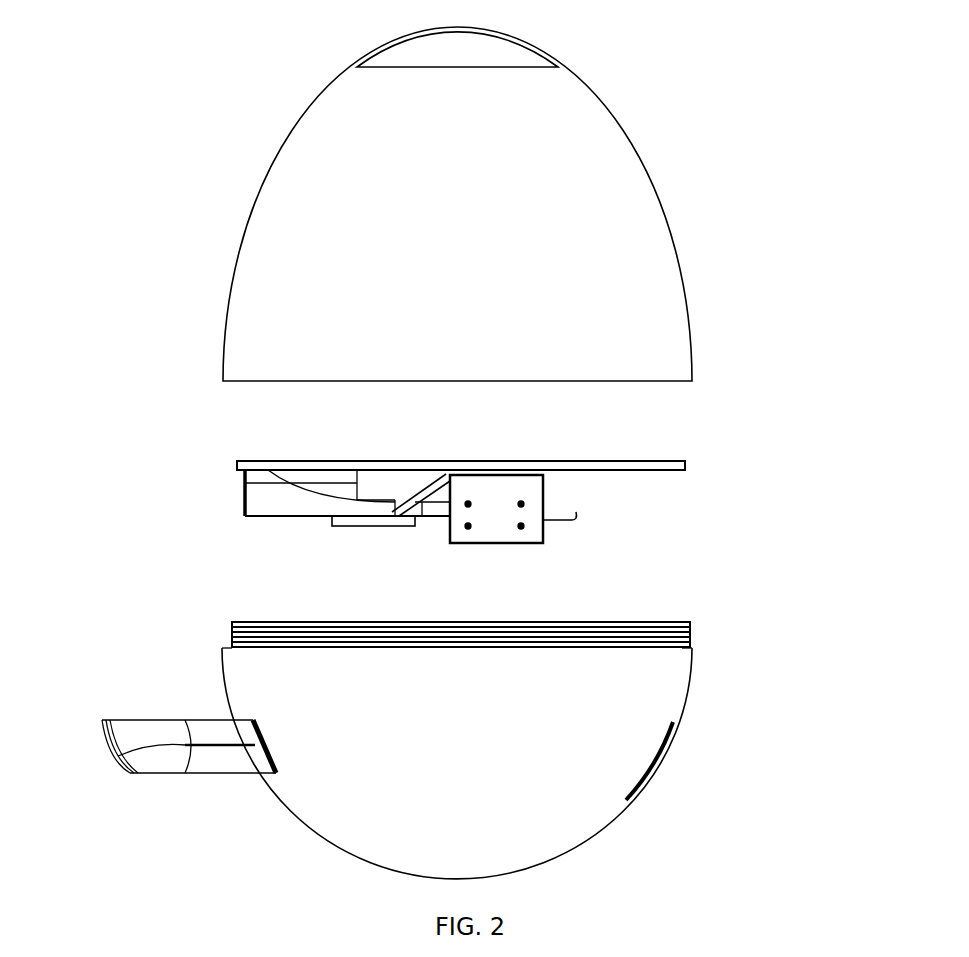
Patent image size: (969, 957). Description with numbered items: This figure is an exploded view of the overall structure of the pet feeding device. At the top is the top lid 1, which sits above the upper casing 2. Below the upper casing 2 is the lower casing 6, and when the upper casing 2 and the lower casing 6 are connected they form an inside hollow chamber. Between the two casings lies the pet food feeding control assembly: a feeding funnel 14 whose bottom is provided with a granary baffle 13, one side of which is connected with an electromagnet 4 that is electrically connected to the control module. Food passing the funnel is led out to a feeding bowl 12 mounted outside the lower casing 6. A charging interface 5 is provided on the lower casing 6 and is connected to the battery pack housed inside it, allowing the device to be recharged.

The top lid 1 is at (452, 55).
The upper casing 2 is at (480, 197).
The electromagnet 4 is at (507, 512).
The charging interface 5 is at (663, 758).
The lower casing 6 is at (490, 735).
The bowl 12 is at (218, 735).
The granary baffle 13 is at (340, 522).
The feeding funnel 14 is at (245, 483).